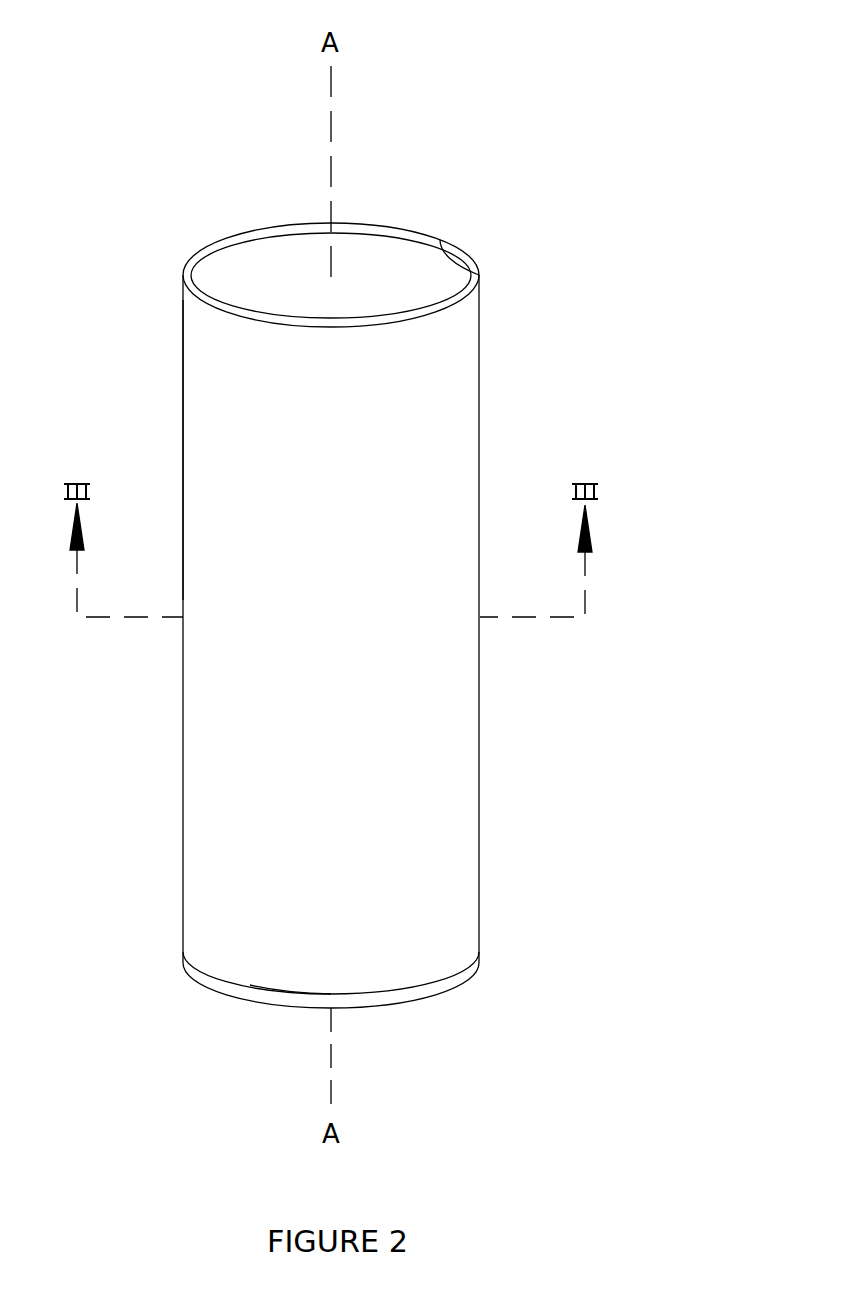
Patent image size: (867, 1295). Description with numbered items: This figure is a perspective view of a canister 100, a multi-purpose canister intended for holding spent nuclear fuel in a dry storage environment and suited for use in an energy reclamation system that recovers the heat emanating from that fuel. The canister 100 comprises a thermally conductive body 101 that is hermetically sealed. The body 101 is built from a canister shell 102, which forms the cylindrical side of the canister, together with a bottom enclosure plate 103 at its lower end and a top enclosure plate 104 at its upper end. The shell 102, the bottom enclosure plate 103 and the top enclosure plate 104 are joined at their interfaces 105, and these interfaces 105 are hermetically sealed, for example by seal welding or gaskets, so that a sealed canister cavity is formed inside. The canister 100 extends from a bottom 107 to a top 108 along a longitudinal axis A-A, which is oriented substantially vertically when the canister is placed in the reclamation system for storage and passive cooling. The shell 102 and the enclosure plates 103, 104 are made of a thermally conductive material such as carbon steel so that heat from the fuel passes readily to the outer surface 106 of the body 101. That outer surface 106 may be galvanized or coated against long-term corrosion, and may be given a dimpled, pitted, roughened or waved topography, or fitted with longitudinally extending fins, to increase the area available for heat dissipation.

The canister 100 is at (563, 83).
The thermally conductive body 101 is at (480, 448).
The canister shell 102 is at (435, 768).
The bottom enclosure plate 103 is at (302, 1000).
The top enclosure plate 104 is at (397, 253).
The interfaces 105 is at (448, 242).
The outer surface 106 is at (222, 383).
The bottom 107 is at (255, 1003).
The top 108 is at (217, 244).